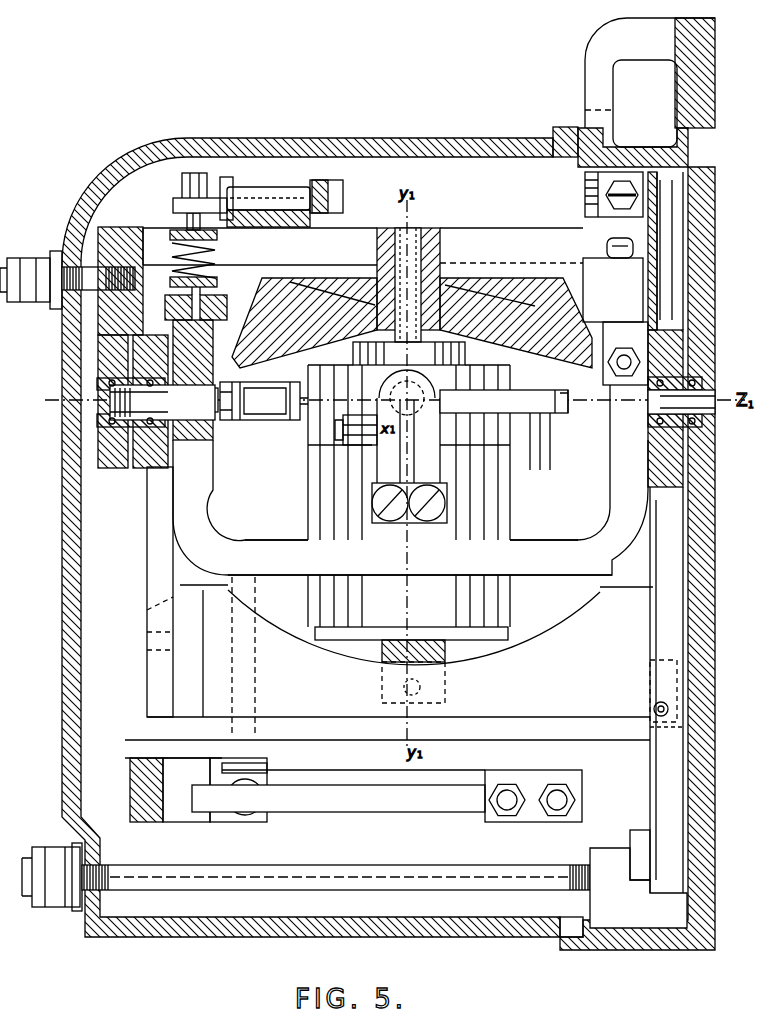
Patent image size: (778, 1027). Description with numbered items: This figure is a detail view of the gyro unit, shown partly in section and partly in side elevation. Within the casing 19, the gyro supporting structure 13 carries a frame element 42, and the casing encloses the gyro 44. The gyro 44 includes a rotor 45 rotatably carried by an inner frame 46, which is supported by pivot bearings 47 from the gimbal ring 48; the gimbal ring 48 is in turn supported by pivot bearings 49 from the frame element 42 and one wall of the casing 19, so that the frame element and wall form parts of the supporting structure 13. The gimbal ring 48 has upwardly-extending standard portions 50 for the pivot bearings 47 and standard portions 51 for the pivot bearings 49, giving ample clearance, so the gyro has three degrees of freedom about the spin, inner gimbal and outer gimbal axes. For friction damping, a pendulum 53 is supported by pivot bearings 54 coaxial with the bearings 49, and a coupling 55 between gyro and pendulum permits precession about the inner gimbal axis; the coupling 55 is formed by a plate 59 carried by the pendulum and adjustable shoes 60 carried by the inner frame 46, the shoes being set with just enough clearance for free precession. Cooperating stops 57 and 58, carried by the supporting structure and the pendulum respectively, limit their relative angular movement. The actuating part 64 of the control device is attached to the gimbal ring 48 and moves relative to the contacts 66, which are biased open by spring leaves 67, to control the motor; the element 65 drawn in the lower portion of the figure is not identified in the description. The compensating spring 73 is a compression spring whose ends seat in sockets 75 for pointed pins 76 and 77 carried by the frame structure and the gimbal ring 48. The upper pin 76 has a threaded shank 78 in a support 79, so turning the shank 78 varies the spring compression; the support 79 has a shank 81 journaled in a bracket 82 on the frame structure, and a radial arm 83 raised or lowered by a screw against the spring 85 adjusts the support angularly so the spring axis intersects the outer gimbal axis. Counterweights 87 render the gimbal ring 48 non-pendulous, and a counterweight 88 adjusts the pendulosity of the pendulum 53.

The gyro supporting structure 13 is at (741, 614).
The casing 19 is at (62, 595).
The frame element 42 is at (108, 232).
The gyro 44 is at (410, 480).
The rotor 45 is at (507, 300).
The inner frame 46 is at (325, 458).
The pivot bearings 47 is at (395, 392).
The gimbal ring 48 is at (245, 555).
The pivot bearings 49 is at (104, 428).
The standard portions 50 is at (437, 462).
The standard portions 51 is at (213, 458).
The pendulum 53 is at (150, 552).
The pivot bearings 54 is at (645, 360).
The coupling 55 is at (442, 688).
The stop 57 is at (650, 712).
The stop 58 is at (663, 702).
The plate 59 is at (530, 643).
The adjustable shoes 60 is at (404, 688).
The actuating part 64 is at (262, 778).
The support rods 65 is at (257, 597).
The contacts 66 is at (232, 815).
The spring leaves 67 is at (343, 812).
The compensating spring 73 is at (218, 252).
The sockets 75 is at (172, 293).
The pointed pin 76 is at (182, 240).
The pointed pin 77 is at (212, 298).
The shank 78 is at (187, 223).
The support 79 is at (178, 205).
The shank 81 is at (265, 196).
The bracket 82 is at (228, 177).
The radial arm 83 is at (320, 183).
The spring 85 is at (292, 227).
The counterweights 87 is at (585, 270).
The counterweight 88 is at (590, 212).